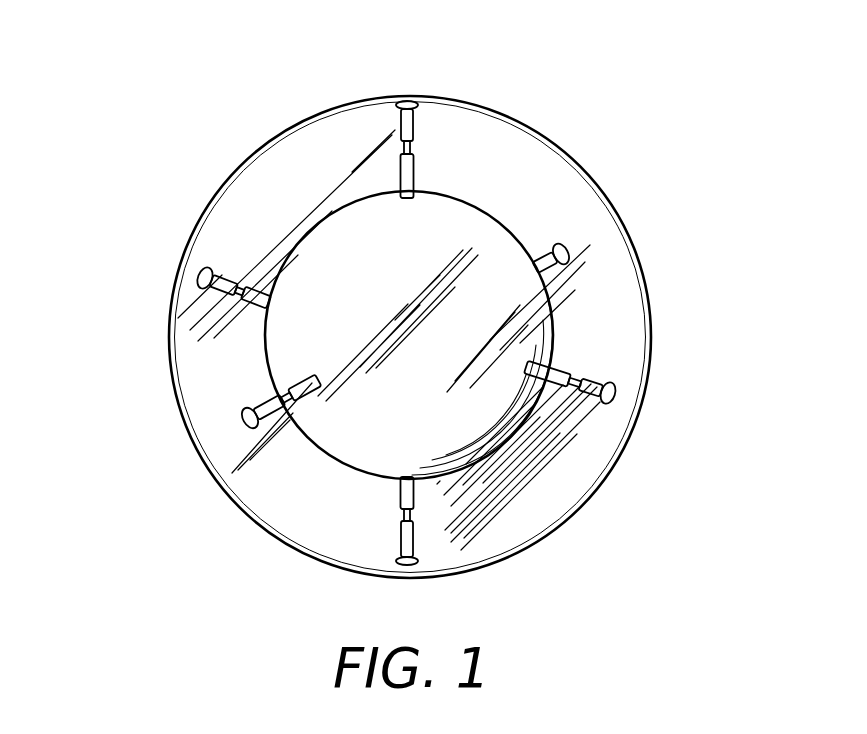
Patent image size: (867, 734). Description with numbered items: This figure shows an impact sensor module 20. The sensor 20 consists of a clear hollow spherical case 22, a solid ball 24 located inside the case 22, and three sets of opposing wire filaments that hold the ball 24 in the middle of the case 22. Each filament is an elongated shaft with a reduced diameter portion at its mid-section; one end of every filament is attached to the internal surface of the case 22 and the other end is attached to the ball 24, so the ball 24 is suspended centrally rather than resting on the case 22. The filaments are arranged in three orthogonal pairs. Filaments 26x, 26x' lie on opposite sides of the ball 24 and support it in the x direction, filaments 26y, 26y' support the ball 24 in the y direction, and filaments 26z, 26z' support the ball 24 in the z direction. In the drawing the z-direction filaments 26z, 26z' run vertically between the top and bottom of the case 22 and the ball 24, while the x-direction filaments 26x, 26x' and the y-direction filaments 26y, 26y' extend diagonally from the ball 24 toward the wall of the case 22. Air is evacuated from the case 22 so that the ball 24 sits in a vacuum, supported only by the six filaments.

The impact sensor module 20 is at (407, 298).
The clear hollow spherical case 22 is at (210, 165).
The solid ball 24 is at (262, 357).
The wire filament 26x is at (203, 442).
The wire filament 26x' is at (627, 230).
The wire filament 26y is at (643, 395).
The wire filament 26y' is at (159, 270).
The wire filament 26z is at (494, 534).
The wire filament 26z' is at (366, 110).